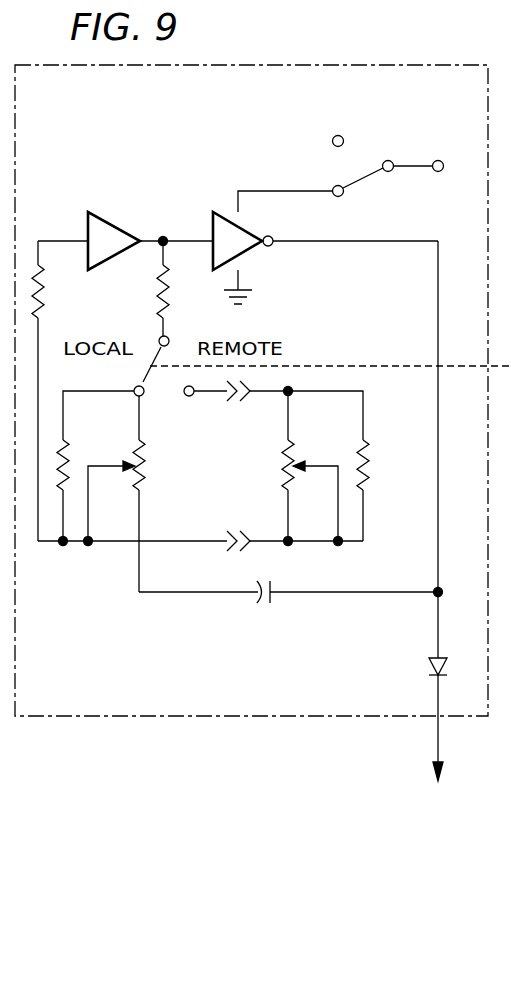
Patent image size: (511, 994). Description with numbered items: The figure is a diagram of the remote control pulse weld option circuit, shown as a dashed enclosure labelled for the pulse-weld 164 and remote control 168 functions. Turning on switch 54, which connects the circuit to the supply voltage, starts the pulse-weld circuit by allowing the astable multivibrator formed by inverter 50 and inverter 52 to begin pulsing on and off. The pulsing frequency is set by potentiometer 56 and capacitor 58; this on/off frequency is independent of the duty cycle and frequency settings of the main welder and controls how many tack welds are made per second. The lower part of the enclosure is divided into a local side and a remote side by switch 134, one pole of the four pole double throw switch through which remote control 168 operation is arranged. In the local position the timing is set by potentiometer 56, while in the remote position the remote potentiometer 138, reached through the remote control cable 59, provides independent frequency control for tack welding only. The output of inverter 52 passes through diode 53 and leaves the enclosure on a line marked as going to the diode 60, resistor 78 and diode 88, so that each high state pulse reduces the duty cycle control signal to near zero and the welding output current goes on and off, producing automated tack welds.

The inverter 50 is at (113, 222).
The inverter 52 is at (250, 253).
The diode 53 is at (430, 664).
The switch 54 is at (358, 176).
The potentiometer 56 is at (146, 468).
The capacitor 58 is at (276, 584).
The cable 59 is at (268, 394).
The switch 134 is at (146, 370).
The potentiometer 138 is at (281, 470).
The pulse-weld 164 is at (251, 360).
The remote control 168 is at (350, 64).
The diode 60 is at (437, 537).
The resistor 78 is at (437, 537).
The diode 88 is at (437, 537).